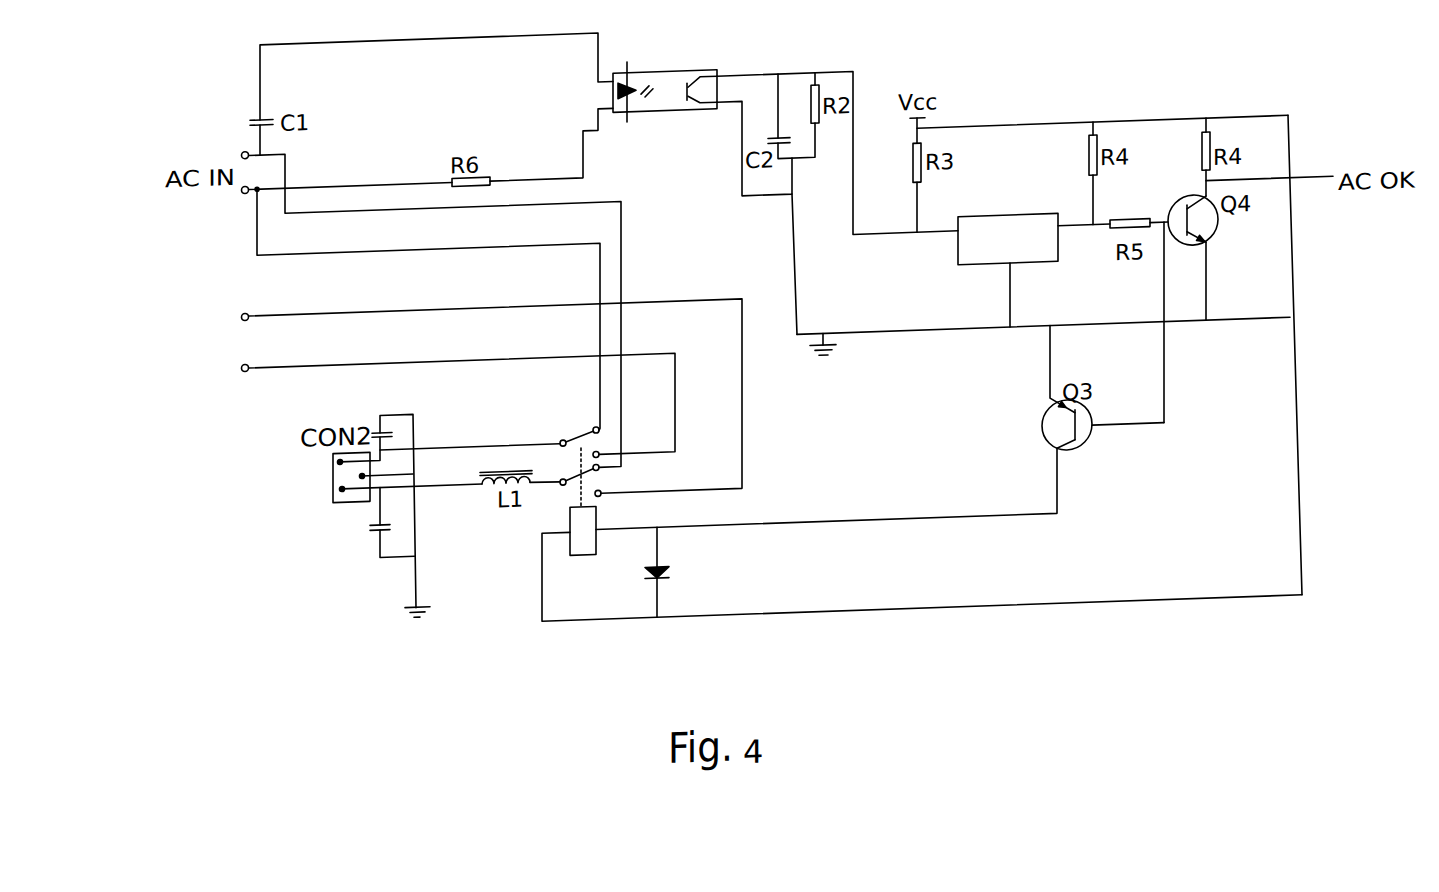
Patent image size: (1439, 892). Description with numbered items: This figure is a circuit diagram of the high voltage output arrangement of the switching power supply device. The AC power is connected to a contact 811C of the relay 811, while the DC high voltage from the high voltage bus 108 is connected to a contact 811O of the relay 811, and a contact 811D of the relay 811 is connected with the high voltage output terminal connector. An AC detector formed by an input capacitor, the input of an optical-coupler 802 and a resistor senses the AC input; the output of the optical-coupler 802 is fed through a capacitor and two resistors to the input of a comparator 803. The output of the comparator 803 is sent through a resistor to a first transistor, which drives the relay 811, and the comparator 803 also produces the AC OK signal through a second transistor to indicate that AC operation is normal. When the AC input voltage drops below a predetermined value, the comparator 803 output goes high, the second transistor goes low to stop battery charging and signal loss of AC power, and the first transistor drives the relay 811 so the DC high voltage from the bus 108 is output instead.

The optocoupler OP1 802 is at (665, 91).
The comparator 803 is at (1008, 226).
The relay 811 is at (588, 519).
The contact 811C is at (567, 417).
The contact 811D is at (526, 435).
The contact 811O is at (649, 472).
The high voltage bus 108 is at (422, 384).